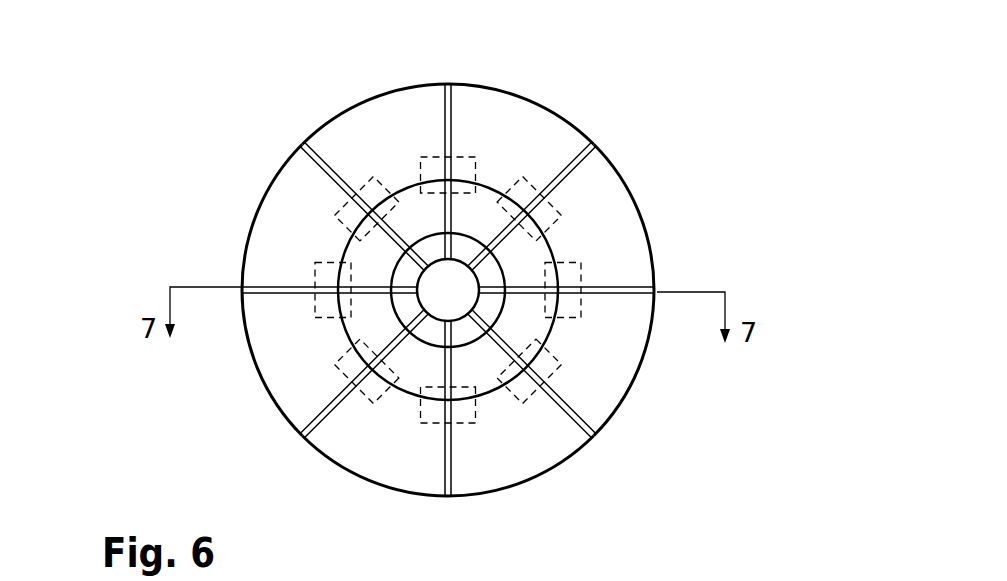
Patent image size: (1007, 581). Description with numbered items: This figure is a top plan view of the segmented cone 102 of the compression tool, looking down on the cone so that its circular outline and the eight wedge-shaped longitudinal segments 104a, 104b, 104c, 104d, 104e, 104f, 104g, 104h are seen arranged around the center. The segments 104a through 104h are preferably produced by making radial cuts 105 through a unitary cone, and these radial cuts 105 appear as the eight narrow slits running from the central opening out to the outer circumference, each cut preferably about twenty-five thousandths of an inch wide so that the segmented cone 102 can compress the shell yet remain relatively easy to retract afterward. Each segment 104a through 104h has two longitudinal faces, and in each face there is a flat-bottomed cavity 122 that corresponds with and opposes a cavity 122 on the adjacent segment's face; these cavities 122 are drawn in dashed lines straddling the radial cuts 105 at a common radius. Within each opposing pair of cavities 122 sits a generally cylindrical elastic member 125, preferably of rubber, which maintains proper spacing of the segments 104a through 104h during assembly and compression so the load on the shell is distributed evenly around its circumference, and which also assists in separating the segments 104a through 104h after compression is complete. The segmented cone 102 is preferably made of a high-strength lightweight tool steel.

The segmented cone 102 is at (600, 124).
The longitudinal segment 104a is at (641, 212).
The longitudinal segment 104b is at (618, 415).
The longitudinal segment 104c is at (530, 482).
The longitudinal segment 104d is at (348, 470).
The longitudinal segment 104e is at (254, 380).
The longitudinal segment 104f is at (252, 215).
The longitudinal segment 104g is at (368, 98).
The longitudinal segment 104h is at (540, 103).
The radial cut 105 is at (448, 84).
The cavity 122 is at (557, 207).
The elastic member 125 is at (325, 300).